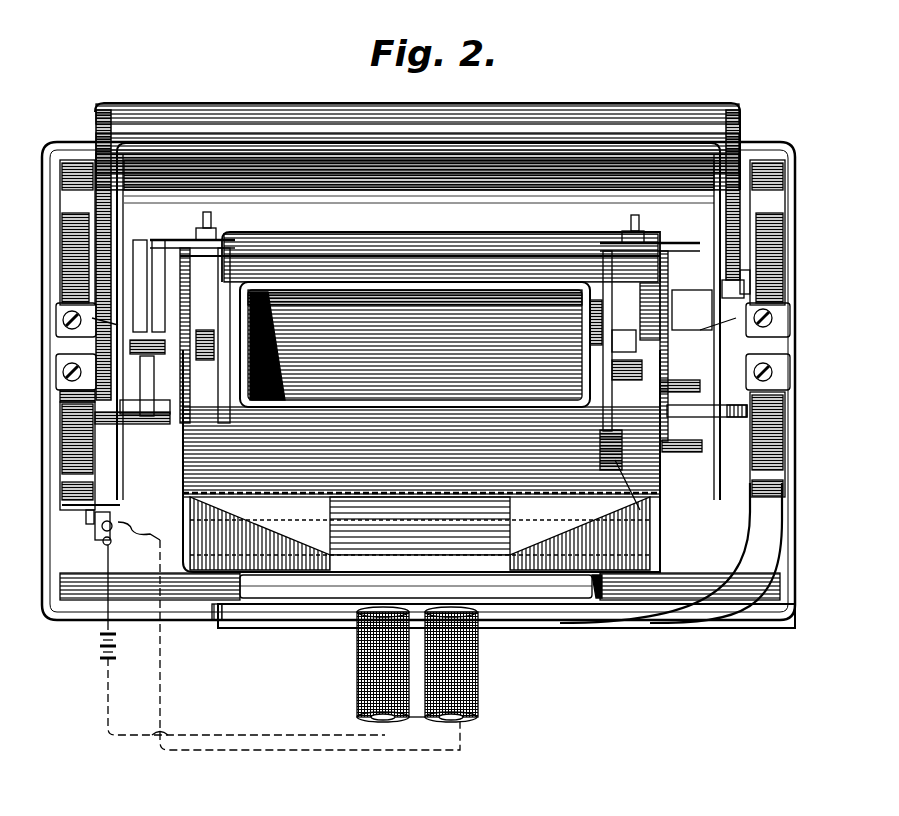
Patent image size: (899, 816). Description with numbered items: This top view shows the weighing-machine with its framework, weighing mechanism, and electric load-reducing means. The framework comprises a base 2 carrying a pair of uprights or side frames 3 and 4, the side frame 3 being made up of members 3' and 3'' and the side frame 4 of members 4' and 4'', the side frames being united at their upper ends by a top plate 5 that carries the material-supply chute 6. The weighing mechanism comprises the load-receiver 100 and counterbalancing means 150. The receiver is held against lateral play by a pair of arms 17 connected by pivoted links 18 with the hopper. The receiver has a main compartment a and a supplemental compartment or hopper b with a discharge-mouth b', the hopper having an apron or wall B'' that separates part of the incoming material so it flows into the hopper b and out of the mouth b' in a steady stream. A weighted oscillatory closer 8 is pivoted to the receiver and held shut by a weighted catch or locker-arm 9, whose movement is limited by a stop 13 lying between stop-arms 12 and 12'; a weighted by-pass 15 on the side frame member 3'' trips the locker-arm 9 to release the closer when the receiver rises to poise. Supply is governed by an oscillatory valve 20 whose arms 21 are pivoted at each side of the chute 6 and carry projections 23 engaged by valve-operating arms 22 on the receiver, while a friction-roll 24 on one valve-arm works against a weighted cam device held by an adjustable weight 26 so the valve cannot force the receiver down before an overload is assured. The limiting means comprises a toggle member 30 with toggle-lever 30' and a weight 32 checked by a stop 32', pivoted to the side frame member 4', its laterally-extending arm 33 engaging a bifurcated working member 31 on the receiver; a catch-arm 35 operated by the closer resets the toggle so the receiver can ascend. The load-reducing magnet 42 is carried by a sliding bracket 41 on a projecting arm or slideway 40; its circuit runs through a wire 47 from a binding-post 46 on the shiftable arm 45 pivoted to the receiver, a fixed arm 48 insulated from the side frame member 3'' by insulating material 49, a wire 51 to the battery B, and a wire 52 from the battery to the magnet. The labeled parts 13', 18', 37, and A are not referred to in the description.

The counterbalancing means 150 is at (417, 241).
The base 2 is at (418, 321).
The main compartment a is at (288, 262).
The load-receiver 100 is at (440, 255).
The chute 6 is at (415, 344).
The apron or wall B'' is at (421, 452).
The discharge-mouth b' is at (421, 581).
The supplemental compartment b is at (486, 617).
The side frame member 3' is at (55, 232).
The side frame 3 is at (57, 456).
The side frame member 3'' is at (52, 492).
The side frame member 4' is at (787, 232).
The side frame 4 is at (784, 444).
The side frame member 4'' is at (791, 468).
The closer 8 is at (92, 318).
The stop-arm 12 is at (89, 329).
The stop-arm 12' is at (54, 372).
The catch or locker-arm 9 is at (62, 396).
The stop 13 is at (173, 331).
The lever arm 13' is at (209, 349).
The rod 18' is at (210, 335).
The arms 17 is at (211, 226).
The valve-arms 21 is at (198, 420).
The valve-operating arms 22 is at (185, 405).
The projections 23 is at (200, 430).
The oscillatory valve 20 is at (606, 300).
The working member 31 is at (666, 300).
The block 37 is at (648, 300).
The laterally-extending arm 33 is at (597, 320).
The pivoted links 18 is at (634, 340).
The toggle-lever 30' is at (637, 366).
The toggle member 30 is at (751, 314).
The weight 32 is at (742, 244).
The stop 32' is at (786, 249).
The catch-arm 35 is at (760, 300).
The top plate 5 is at (767, 361).
The adjustable weight 26 is at (600, 450).
The friction-roll 24 is at (631, 497).
The insulating material 49 is at (95, 517).
The arm 48 is at (90, 524).
The weighted by-pass 15 is at (66, 508).
The binding-post 46 is at (104, 530).
The arm 45 is at (140, 538).
The wire 51 is at (97, 587).
The battery B is at (93, 645).
The wire 52 is at (108, 695).
The wire 47 is at (160, 690).
The projecting arm 40 is at (556, 620).
The magnet 42 is at (358, 650).
The electromagnet A is at (466, 664).
The sliding bracket 41 is at (418, 712).